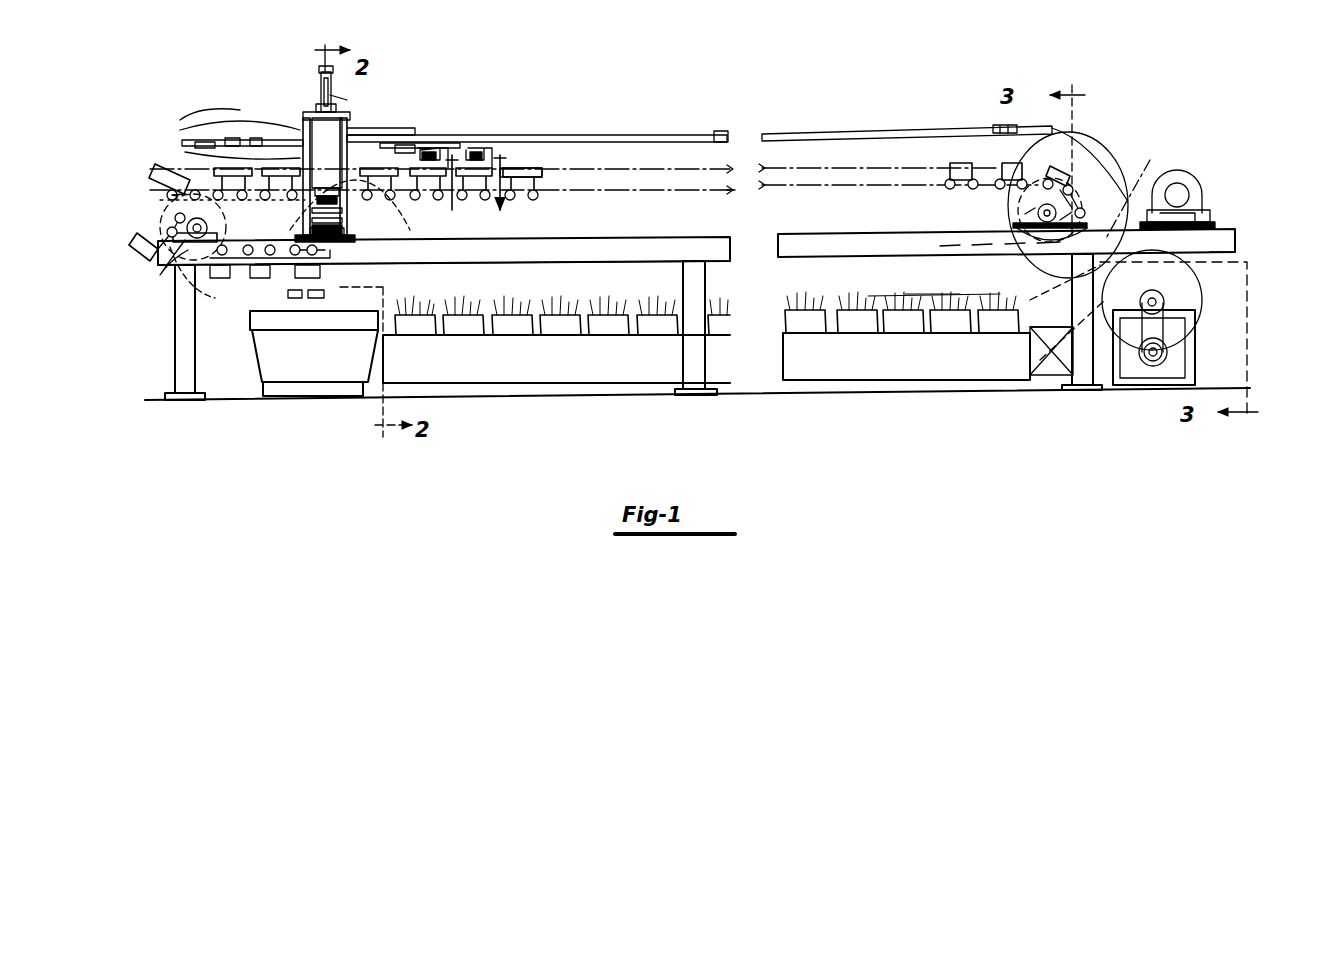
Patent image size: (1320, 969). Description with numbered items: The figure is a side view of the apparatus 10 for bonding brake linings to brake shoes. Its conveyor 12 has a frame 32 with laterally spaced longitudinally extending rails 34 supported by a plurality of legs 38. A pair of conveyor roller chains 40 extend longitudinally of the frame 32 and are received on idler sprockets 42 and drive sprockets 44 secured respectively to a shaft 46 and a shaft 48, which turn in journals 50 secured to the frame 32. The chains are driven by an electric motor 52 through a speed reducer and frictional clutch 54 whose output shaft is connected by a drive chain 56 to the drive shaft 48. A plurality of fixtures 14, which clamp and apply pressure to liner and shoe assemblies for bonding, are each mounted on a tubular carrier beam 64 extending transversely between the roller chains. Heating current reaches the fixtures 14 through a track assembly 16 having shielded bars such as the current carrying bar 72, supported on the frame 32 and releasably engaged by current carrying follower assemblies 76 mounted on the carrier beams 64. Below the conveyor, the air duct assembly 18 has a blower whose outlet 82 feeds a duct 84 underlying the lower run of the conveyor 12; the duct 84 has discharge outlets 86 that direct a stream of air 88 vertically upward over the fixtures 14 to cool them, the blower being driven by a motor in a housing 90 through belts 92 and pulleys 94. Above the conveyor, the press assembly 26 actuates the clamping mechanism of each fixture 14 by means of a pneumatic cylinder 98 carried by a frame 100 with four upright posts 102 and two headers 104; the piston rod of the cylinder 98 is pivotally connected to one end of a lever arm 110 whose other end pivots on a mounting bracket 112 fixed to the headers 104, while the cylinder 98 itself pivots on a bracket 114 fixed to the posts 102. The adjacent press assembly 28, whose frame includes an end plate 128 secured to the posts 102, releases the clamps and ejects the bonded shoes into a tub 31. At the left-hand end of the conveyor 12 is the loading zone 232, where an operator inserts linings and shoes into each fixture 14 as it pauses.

The apparatus 10 is at (196, 82).
The conveyor 12 is at (160, 210).
The fixtures 14 is at (158, 170).
The track assembly 16 is at (432, 135).
The air duct assembly 18 is at (912, 392).
The press assembly 26 is at (312, 94).
The press assembly 28 is at (400, 262).
The tub 31 is at (268, 352).
The frame 32 is at (674, 237).
The rails 34 is at (1222, 243).
The legs 38 is at (176, 360).
The conveyor roller chains 40 is at (682, 192).
The idler sprockets 42 is at (148, 252).
The drive sprockets 44 is at (1015, 211).
The shaft 46 is at (170, 272).
The shaft 48 is at (1085, 204).
The journals 50 is at (188, 258).
The electric motor 52 is at (1182, 194).
The speed reducer and frictional clutch 54 is at (1180, 172).
The drive chain 56 is at (1135, 175).
The tubular carrier beam 64 is at (540, 190).
The current carrying bar 72 is at (1208, 298).
The current carrying follower assemblies 76 is at (450, 135).
The outlet 82 is at (1038, 382).
The duct 84 is at (882, 362).
The discharge outlets 86 is at (555, 360).
The stream of air 88 is at (805, 298).
The housing 90 is at (1143, 385).
The belts 92 is at (1166, 322).
The pulleys 94 is at (1162, 296).
The pneumatic cylinder 98 is at (325, 150).
The frame 100 is at (348, 212).
The upright posts 102 is at (200, 150).
The headers 104 is at (240, 123).
The lever arm 110 is at (318, 78).
The mounting bracket 112 is at (348, 104).
The bracket 114 is at (300, 205).
The end plate 128 is at (265, 283).
The loading zone 232 is at (216, 98).